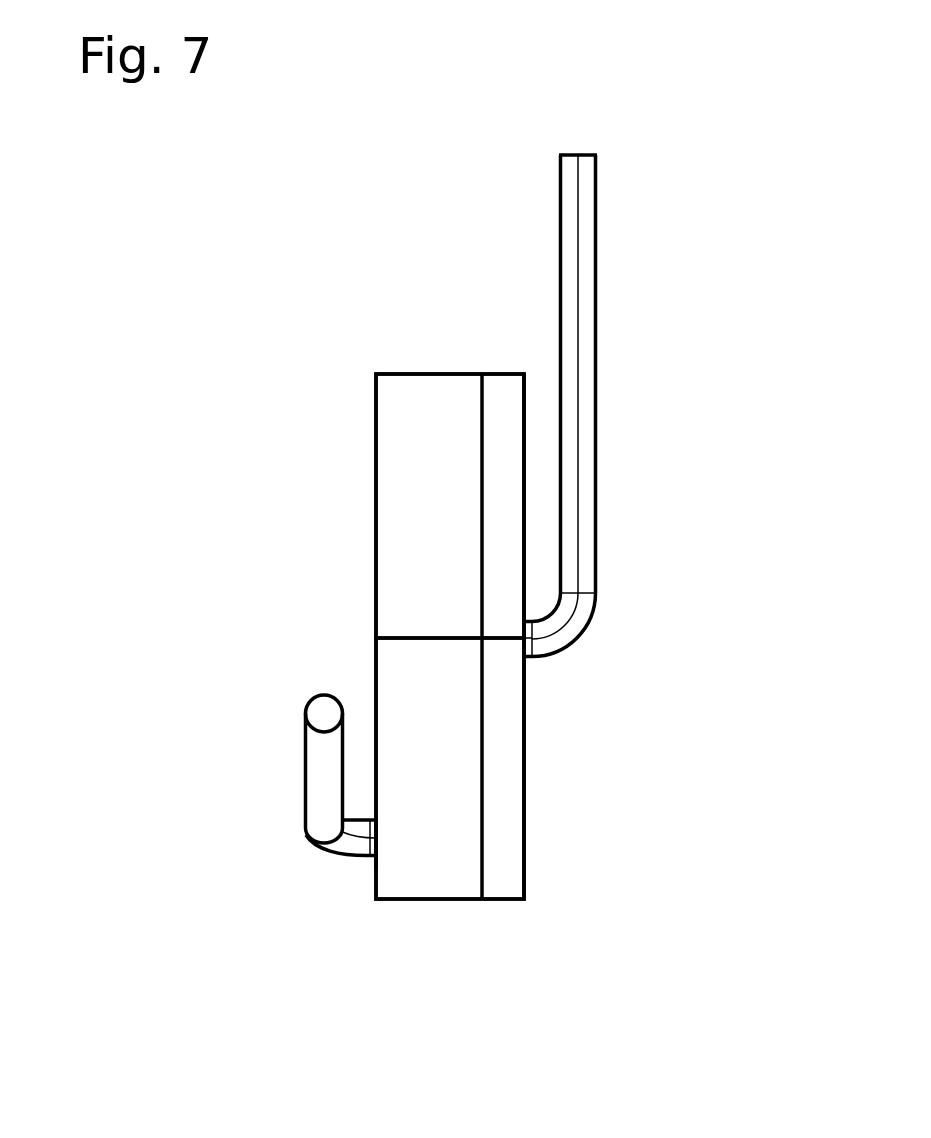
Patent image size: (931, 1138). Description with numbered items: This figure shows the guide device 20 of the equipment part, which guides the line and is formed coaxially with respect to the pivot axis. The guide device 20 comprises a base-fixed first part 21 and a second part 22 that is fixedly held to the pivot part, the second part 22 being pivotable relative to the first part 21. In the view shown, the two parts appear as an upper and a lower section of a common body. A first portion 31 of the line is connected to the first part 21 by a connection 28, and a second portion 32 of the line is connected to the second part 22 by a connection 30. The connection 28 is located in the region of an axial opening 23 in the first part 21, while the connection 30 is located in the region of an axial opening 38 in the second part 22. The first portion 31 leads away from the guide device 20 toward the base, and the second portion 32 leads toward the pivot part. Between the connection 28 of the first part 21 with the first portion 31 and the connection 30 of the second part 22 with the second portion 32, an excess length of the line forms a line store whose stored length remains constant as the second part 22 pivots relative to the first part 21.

The guide device 20 is at (392, 356).
The first part 21 is at (505, 842).
The second part 22 is at (395, 428).
The axial opening 23 is at (538, 678).
The connection 28 is at (534, 662).
The connection 30 is at (362, 868).
The first portion 31 is at (588, 283).
The second portion 32 is at (305, 840).
The axial opening 38 is at (332, 864).